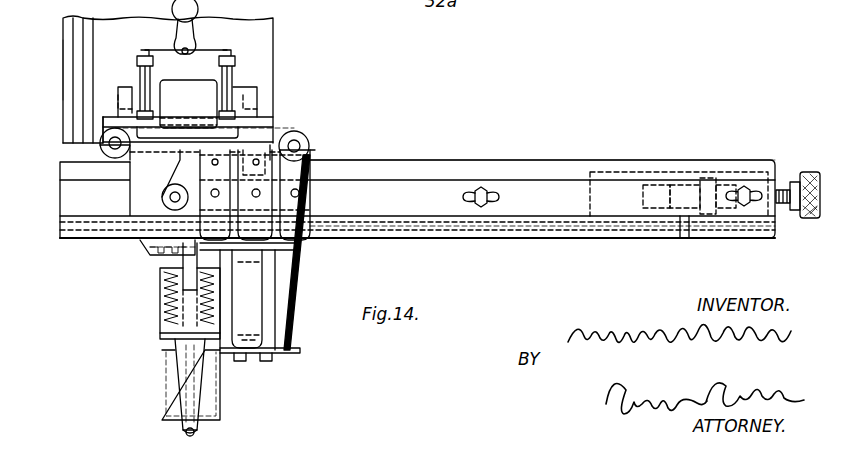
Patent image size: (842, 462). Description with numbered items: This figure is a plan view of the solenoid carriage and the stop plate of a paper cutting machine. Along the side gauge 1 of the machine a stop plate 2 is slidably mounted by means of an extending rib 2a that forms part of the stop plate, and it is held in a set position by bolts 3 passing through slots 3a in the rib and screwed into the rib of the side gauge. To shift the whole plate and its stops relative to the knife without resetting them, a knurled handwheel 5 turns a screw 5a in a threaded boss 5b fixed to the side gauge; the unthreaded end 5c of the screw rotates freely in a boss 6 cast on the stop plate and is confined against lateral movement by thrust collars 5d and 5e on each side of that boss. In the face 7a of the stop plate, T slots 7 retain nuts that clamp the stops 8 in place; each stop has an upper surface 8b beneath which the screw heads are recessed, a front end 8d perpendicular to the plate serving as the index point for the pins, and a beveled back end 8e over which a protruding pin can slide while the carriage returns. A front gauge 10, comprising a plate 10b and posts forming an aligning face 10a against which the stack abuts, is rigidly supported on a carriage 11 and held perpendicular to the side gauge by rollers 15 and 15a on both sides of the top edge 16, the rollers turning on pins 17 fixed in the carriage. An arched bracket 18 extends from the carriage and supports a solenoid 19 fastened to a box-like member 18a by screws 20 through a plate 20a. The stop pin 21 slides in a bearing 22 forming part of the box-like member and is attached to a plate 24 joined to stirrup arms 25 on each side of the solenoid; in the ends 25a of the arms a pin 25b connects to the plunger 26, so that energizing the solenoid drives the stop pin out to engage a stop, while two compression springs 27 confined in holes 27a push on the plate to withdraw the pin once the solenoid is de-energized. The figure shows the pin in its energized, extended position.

The side gauge 1 is at (538, 165).
The stop plate 2 is at (563, 238).
The extending rib 2a is at (553, 192).
The bolts 3 is at (486, 190).
The slots 3a is at (474, 192).
The knurled handwheel 5 is at (812, 220).
The screw 5a is at (784, 184).
The threaded boss 5b is at (765, 172).
The unthreaded end of screw 5c is at (705, 178).
The thrust collar 5d is at (650, 185).
The thrust collar 5e is at (722, 185).
The boss 6 is at (683, 185).
The T slots 7 is at (340, 226).
The face of stop plate 7a is at (490, 238).
The stops 8 is at (150, 254).
The surface of stop 8b is at (167, 256).
The front end of stop 8d is at (290, 258).
The back end of stop 8e is at (147, 250).
The front gauge 10 is at (264, 42).
The aligning face 10a is at (64, 59).
The plate of front gauge 10b is at (265, 72).
The carriage 11 is at (243, 118).
The roller 15 is at (300, 141).
The roller 15a is at (162, 198).
The top edge of side gauge 16 is at (352, 163).
The pins 17 is at (115, 143).
The bracket 18 is at (282, 218).
The box-like member 18a is at (290, 300).
The solenoid 19 is at (215, 396).
The screws 20 is at (272, 362).
The plate 20a is at (300, 351).
The stop pin 21 is at (185, 262).
The bearing 22 is at (160, 300).
The plate 24 is at (166, 338).
The arms 25 is at (177, 388).
The ends of arms 25a is at (196, 432).
The pin 25b is at (182, 430).
The plunger 26 is at (205, 406).
The compression springs 27 is at (170, 311).
The holes 27a is at (165, 330).